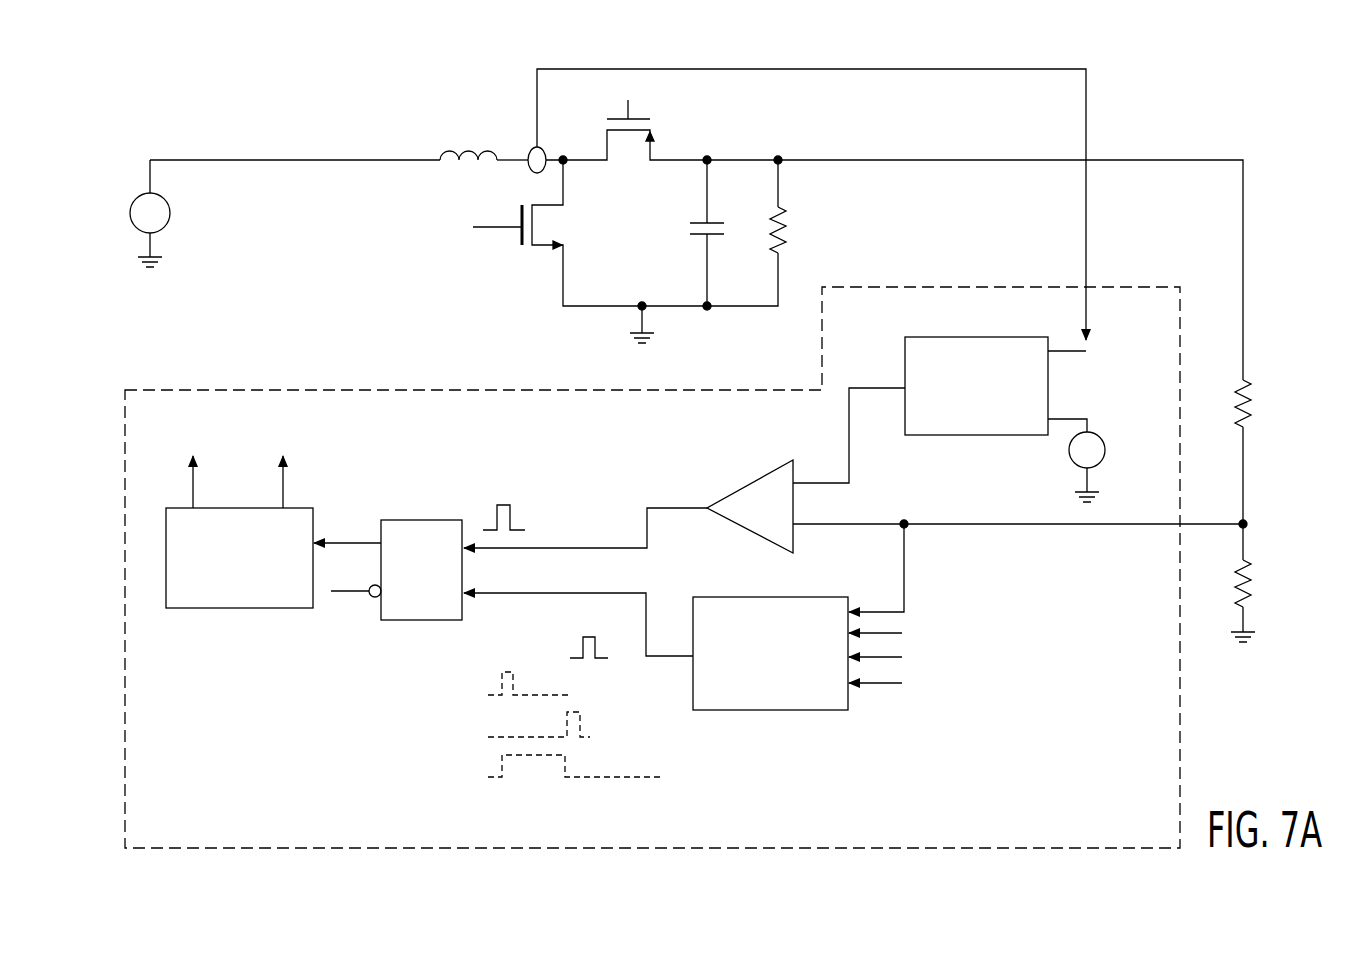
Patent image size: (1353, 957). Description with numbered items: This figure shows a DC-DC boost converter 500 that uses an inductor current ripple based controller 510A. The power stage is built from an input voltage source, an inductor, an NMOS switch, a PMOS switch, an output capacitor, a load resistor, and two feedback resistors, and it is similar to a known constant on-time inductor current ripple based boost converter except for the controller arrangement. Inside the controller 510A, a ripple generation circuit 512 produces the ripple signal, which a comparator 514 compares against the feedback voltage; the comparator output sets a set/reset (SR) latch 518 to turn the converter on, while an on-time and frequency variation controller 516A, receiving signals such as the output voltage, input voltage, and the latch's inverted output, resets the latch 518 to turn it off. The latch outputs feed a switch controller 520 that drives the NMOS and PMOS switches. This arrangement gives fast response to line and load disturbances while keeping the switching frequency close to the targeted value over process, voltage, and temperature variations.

The DC-DC boost converter 500 is at (1275, 118).
The inductor current ripple based controller 510A is at (1180, 703).
The ripple generation circuit 512 is at (1000, 437).
The comparator 514 is at (748, 478).
The on-time and frequency variation controller 516A is at (787, 712).
The set/reset (SR) latch 518 is at (422, 520).
The switch controller 520 is at (242, 608).